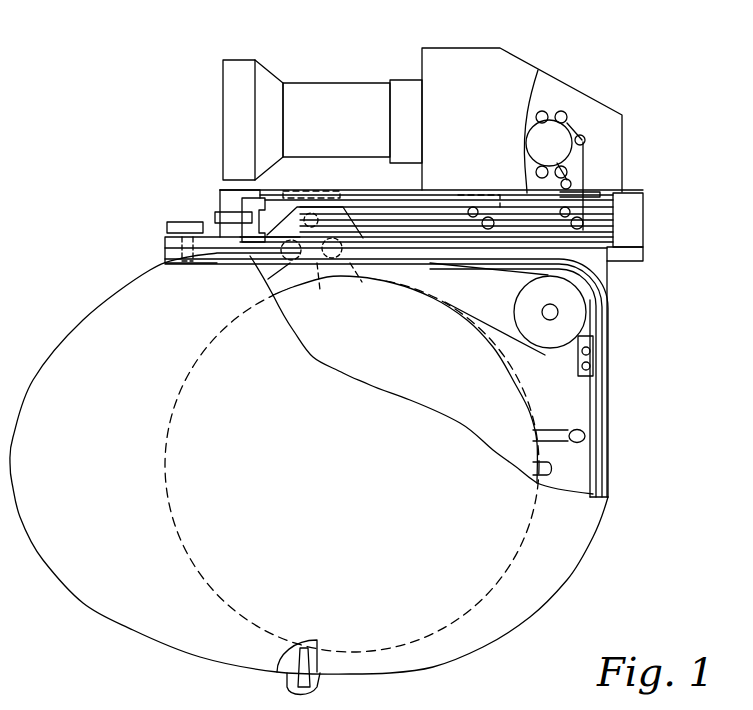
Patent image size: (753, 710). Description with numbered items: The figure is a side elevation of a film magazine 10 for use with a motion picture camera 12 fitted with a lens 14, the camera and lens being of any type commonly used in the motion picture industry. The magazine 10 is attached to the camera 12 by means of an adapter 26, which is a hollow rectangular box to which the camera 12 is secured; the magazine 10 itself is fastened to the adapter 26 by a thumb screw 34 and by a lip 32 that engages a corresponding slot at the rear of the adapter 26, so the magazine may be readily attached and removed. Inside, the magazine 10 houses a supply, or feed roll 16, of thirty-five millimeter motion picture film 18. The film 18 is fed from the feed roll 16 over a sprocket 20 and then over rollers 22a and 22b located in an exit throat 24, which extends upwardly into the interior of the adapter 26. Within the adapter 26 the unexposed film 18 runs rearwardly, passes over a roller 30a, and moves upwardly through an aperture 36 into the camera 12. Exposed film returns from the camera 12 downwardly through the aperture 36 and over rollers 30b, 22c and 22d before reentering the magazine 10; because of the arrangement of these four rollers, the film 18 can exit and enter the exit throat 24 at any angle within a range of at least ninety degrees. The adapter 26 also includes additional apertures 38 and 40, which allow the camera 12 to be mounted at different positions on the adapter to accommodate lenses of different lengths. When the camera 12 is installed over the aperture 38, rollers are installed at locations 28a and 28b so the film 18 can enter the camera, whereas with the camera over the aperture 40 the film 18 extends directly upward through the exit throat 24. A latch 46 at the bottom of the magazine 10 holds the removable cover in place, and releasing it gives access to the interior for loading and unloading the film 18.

The film magazine 10 is at (85, 318).
The motion picture camera 12 is at (503, 52).
The lens 14 is at (323, 85).
The feed roll 16 is at (507, 405).
The motion picture film 18 is at (497, 330).
The sprocket 20 is at (577, 297).
The roller 22a is at (320, 290).
The roller 22b is at (362, 282).
The roller 22c is at (311, 213).
The roller 22d is at (260, 260).
The exit throat 24 is at (292, 222).
The adapter 26 is at (643, 224).
The roller location 28a is at (490, 217).
The roller location 28b is at (470, 211).
The roller 30a is at (580, 225).
The roller 30b is at (580, 213).
The lip 32 is at (643, 254).
The thumb screw 34 is at (170, 222).
The aperture 36 is at (567, 212).
The aperture 38 is at (472, 205).
The aperture 40 is at (310, 191).
The latch 46 is at (320, 682).